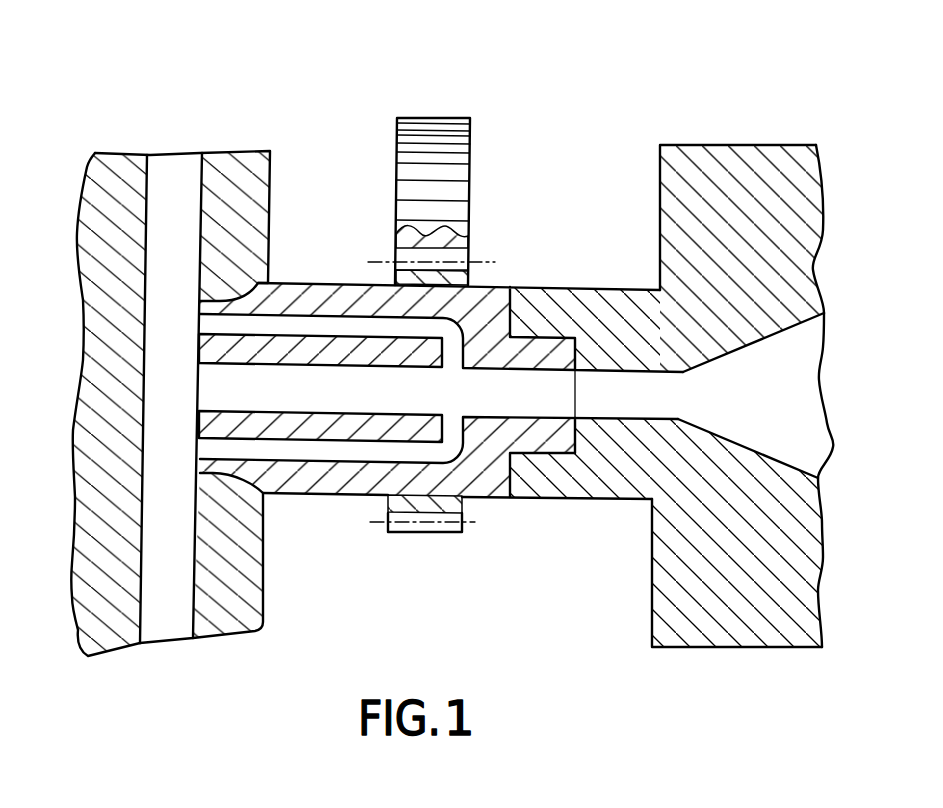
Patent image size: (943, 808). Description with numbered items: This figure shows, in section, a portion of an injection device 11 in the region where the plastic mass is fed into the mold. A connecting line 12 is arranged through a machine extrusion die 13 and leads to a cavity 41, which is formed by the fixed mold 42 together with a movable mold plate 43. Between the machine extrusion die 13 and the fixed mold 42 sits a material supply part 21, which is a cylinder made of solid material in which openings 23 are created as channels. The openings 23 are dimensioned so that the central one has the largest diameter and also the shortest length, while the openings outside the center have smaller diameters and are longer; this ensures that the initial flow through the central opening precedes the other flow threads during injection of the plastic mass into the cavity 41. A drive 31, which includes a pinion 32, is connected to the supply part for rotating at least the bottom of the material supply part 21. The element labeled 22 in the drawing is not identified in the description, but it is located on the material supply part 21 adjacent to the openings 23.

The injection device 11 is at (703, 396).
The connecting line 12 is at (820, 334).
The machine extrusion die 13 is at (580, 499).
The material supply part 21 is at (293, 495).
The inner tube wall 22 is at (352, 442).
The openings 23 is at (317, 385).
The drive 31 is at (450, 277).
The pinion 32 is at (462, 192).
The cavity 41 is at (182, 160).
The fixed mold 42 is at (270, 202).
The movable mold plate 43 is at (97, 163).